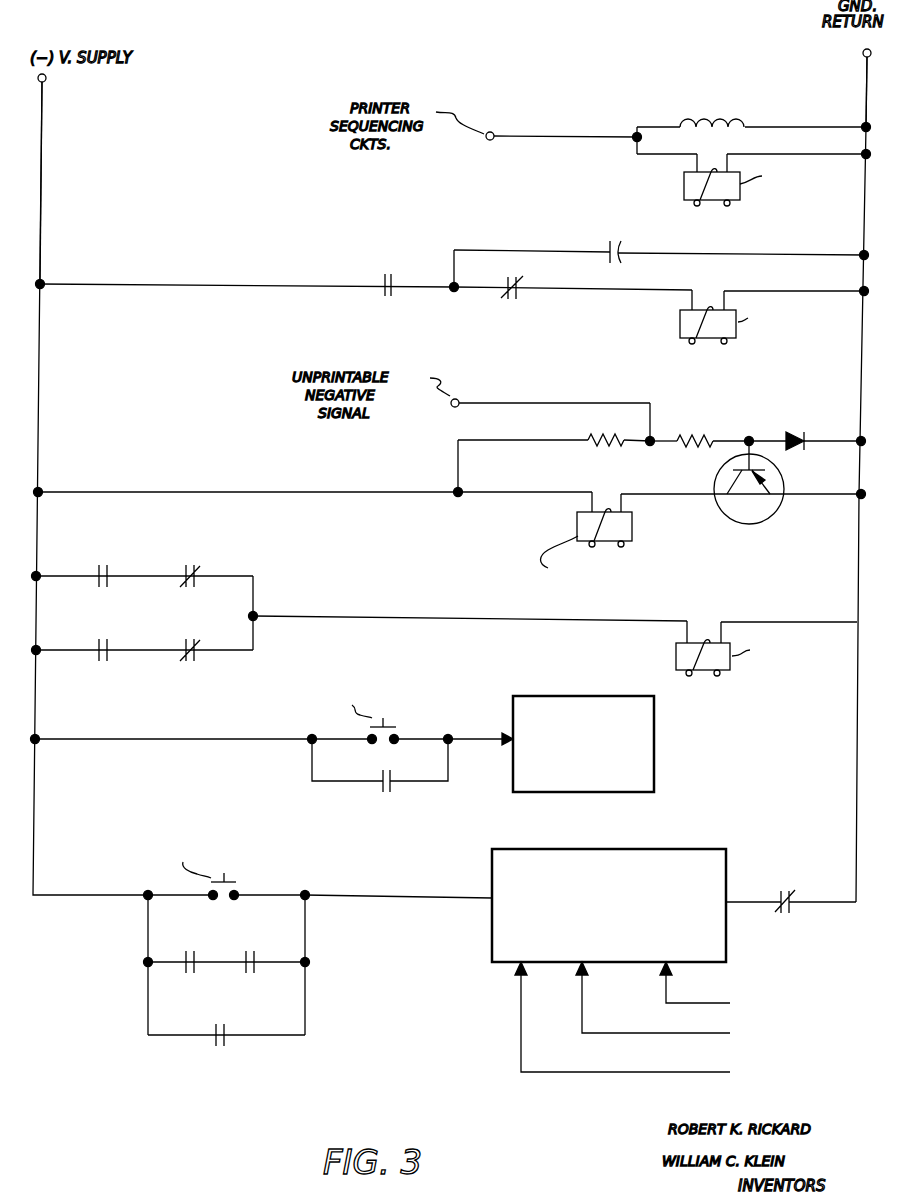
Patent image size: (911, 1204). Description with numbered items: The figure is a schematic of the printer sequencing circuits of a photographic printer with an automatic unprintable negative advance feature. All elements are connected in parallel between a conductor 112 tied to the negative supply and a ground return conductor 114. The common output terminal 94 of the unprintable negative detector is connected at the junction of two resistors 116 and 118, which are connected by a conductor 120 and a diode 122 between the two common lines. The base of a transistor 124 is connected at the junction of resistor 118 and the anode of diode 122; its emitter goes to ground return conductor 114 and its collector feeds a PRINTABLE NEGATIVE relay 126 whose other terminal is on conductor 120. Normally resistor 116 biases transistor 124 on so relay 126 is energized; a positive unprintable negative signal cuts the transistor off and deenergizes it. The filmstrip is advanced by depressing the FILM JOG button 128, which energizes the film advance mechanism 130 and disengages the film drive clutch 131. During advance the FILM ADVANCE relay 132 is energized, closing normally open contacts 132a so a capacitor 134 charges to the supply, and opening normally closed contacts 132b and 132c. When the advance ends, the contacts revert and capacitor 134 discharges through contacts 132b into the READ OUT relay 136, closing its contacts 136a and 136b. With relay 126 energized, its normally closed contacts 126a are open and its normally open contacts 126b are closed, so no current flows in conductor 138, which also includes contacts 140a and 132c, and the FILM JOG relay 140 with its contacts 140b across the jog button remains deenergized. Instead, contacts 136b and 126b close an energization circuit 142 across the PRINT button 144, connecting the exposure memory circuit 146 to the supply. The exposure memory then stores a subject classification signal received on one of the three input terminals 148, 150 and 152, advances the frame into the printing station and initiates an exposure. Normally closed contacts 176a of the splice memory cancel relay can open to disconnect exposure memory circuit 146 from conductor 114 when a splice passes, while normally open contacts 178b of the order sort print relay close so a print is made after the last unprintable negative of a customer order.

The conductor 112 is at (42, 124).
The ground return conductor 114 is at (863, 74).
The film drive clutch 131 is at (752, 116).
The FILM ADVANCE relay 132 is at (684, 186).
The normally open relay contacts 132a is at (385, 277).
The normally closed relay contacts 132b is at (518, 300).
The capacitor 134 is at (622, 248).
The READ OUT relay 136 is at (680, 324).
The common output terminal 94 is at (542, 404).
The resistor 116 is at (596, 448).
The resistor 118 is at (712, 434).
The diode 122 is at (811, 420).
The transistor 124 is at (772, 504).
The conductor 120 is at (362, 497).
The PRINTABLE NEGATIVE relay 126 is at (632, 526).
The normally open relay contacts 136a is at (112, 568).
The normally closed relay contacts 126a is at (200, 566).
The conductor 138 is at (354, 622).
The relay contacts 140a is at (101, 664).
The normally closed relay contacts 132c is at (196, 664).
The FILM JOG relay 140 is at (676, 655).
The FILM JOG button 128 is at (416, 720).
The relay contacts 140b is at (393, 785).
The film advance mechanism 130 is at (656, 760).
The PRINT button 144 is at (236, 878).
The normally open relay contacts 136b is at (205, 946).
The normally open relay contacts 126b is at (265, 946).
The energization circuit 142 is at (280, 966).
The normally open relay contacts 178b is at (230, 1044).
The normally closed relay contacts 176a is at (778, 894).
The exposure memory circuit 146 is at (727, 946).
The subject classification input terminal 148 is at (730, 1003).
The subject classification input terminal 150 is at (730, 1033).
The subject classification input terminal 152 is at (730, 1072).